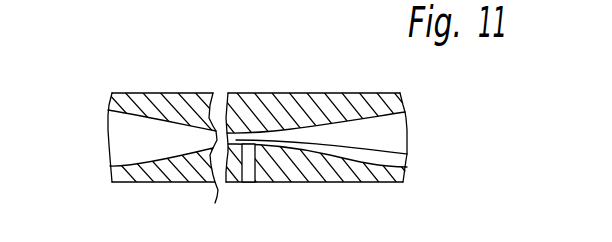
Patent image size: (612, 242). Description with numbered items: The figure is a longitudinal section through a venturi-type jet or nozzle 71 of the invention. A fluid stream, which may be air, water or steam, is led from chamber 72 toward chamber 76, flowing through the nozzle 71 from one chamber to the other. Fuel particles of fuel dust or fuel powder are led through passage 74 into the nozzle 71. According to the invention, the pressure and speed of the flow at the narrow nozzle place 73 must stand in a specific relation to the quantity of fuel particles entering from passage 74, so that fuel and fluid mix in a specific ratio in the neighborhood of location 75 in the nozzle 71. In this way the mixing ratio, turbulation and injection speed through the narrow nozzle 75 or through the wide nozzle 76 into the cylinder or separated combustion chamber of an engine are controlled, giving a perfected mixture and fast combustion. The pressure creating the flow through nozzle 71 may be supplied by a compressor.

The nozzle 71 is at (398, 99).
The chamber 72 is at (395, 133).
The narrow nozzle place 73 is at (407, 154).
The passage 74 is at (250, 172).
The location in the nozzle 75 is at (215, 161).
The chamber 76 is at (127, 140).